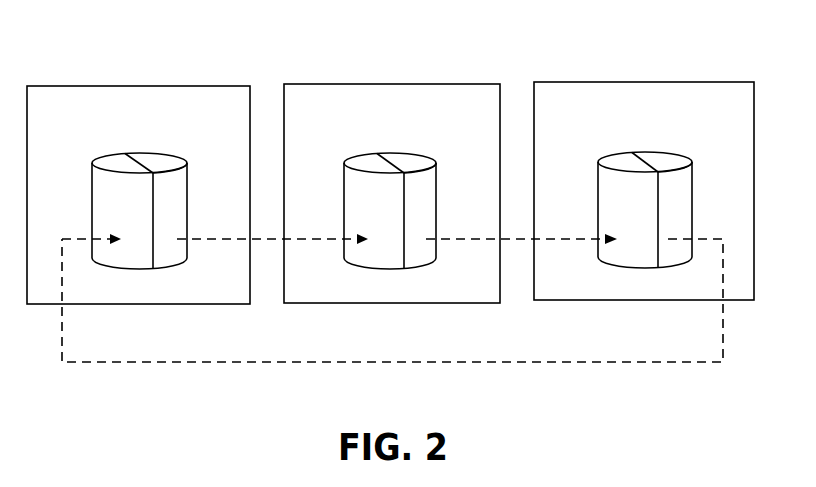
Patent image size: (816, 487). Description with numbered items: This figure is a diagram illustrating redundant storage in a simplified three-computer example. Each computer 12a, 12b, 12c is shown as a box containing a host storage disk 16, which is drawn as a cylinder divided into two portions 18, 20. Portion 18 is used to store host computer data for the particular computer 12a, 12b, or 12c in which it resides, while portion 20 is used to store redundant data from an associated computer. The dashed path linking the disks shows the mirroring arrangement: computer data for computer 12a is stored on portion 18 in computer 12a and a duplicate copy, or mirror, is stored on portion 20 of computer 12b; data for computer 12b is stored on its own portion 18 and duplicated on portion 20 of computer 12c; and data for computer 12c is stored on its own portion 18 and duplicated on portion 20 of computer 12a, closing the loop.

The computer 12a is at (138, 86).
The computer 12b is at (390, 84).
The computer 12c is at (645, 82).
The host storage disk 16 is at (187, 192).
The portion 18 is at (160, 162).
The portion 20 is at (115, 162).